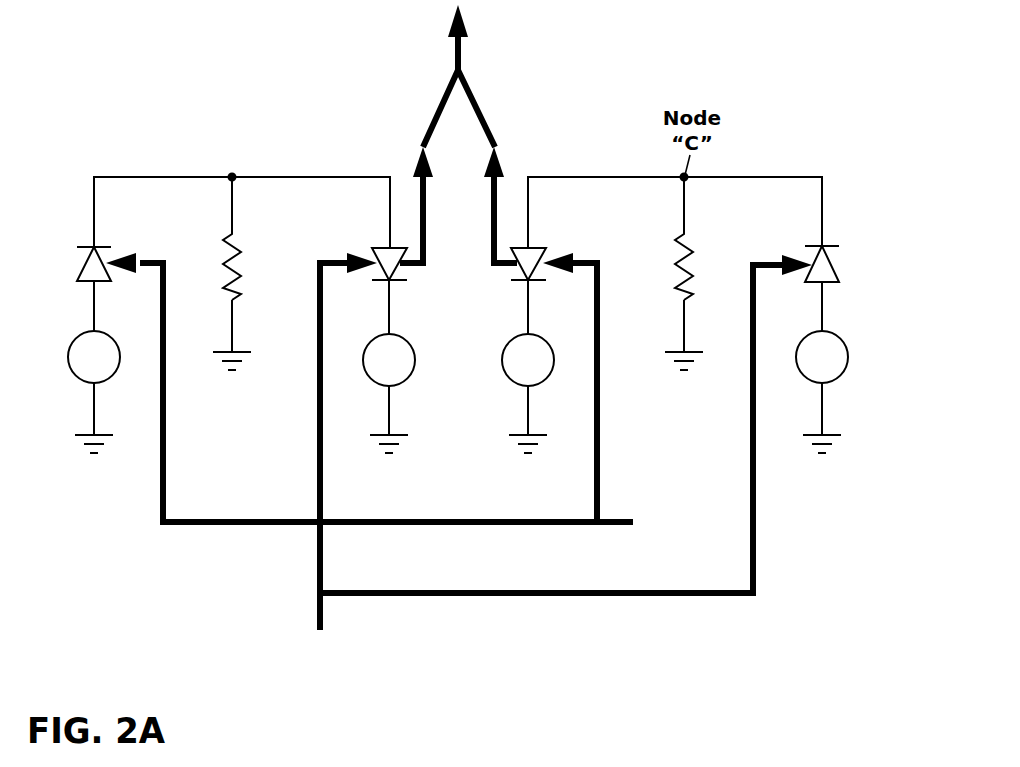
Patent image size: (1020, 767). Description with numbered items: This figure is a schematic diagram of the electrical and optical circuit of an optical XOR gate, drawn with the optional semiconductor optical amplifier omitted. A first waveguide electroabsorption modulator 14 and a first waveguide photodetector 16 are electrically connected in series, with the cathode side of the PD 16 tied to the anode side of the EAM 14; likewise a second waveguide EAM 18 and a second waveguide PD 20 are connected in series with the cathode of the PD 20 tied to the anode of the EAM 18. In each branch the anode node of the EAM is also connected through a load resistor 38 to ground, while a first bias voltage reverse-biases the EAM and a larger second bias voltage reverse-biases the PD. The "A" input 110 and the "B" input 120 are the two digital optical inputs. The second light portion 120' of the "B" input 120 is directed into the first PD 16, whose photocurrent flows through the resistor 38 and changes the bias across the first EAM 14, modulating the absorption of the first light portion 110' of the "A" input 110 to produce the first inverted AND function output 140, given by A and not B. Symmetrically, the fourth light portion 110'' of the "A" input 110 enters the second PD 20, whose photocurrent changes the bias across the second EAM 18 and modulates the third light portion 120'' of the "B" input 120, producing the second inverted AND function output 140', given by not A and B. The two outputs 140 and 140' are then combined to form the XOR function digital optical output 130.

The first waveguide electroabsorption modulator 14 is at (552, 242).
The first waveguide photodetector 16 is at (843, 238).
The second waveguide electroabsorption modulator 18 is at (365, 243).
The second waveguide photodetector 20 is at (72, 240).
The load resistor 38 is at (742, 242).
The first digital optical input 110 is at (418, 399).
The first light portion 110' is at (603, 387).
The fourth light portion 110'' is at (127, 387).
The second digital optical input 120 is at (318, 487).
The second light portion 120' is at (570, 424).
The third light portion 120'' is at (312, 423).
The XOR function digital optical output 130 is at (460, 57).
The first inverted AND function output 140 is at (524, 205).
The second inverted AND function output 140' is at (388, 205).